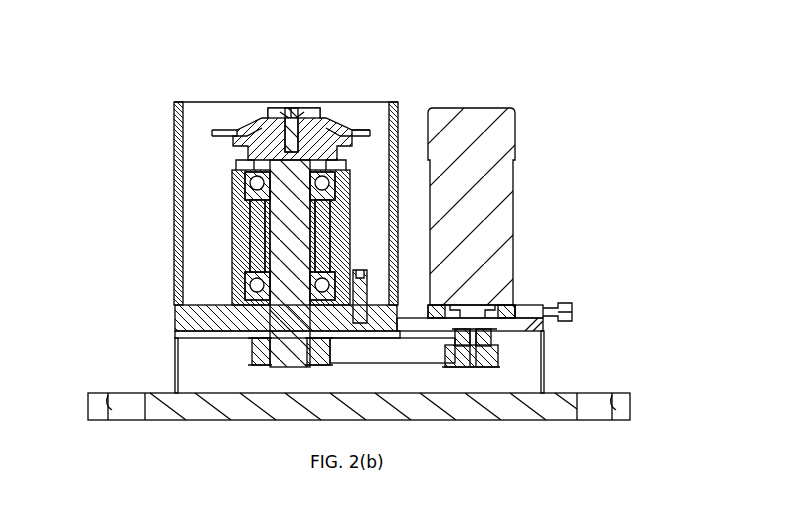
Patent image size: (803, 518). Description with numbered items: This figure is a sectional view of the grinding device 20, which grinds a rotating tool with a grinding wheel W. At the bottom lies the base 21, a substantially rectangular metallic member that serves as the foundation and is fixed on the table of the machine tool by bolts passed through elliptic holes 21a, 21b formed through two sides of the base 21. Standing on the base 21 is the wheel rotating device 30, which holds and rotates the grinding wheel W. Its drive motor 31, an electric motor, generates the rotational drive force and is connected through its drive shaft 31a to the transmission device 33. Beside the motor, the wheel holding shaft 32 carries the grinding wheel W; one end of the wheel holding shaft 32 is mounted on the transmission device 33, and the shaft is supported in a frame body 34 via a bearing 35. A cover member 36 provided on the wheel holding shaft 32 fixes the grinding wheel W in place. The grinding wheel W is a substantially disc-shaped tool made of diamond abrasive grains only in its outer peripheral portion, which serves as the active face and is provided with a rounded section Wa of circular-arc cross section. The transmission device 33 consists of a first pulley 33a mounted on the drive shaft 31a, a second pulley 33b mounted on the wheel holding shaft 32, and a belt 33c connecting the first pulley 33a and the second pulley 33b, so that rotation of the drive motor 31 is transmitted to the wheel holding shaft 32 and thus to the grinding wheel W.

The grinding device 20 is at (524, 66).
The base 21 is at (90, 400).
The elliptic hole 21a is at (118, 398).
The elliptic hole 21b is at (606, 398).
The wheel rotating device 30 is at (400, 82).
The drive motor 31 is at (482, 112).
The drive shaft 31a is at (472, 352).
The wheel holding shaft 32 is at (334, 138).
The transmission device 33 is at (363, 355).
The first pulley 33a is at (490, 348).
The second pulley 33b is at (255, 348).
The belt 33c is at (388, 356).
The frame body 34 is at (233, 226).
The bearing 35 is at (248, 188).
The cover member 36 is at (302, 124).
The grinding wheel W is at (226, 130).
The rounded section Wa is at (366, 130).